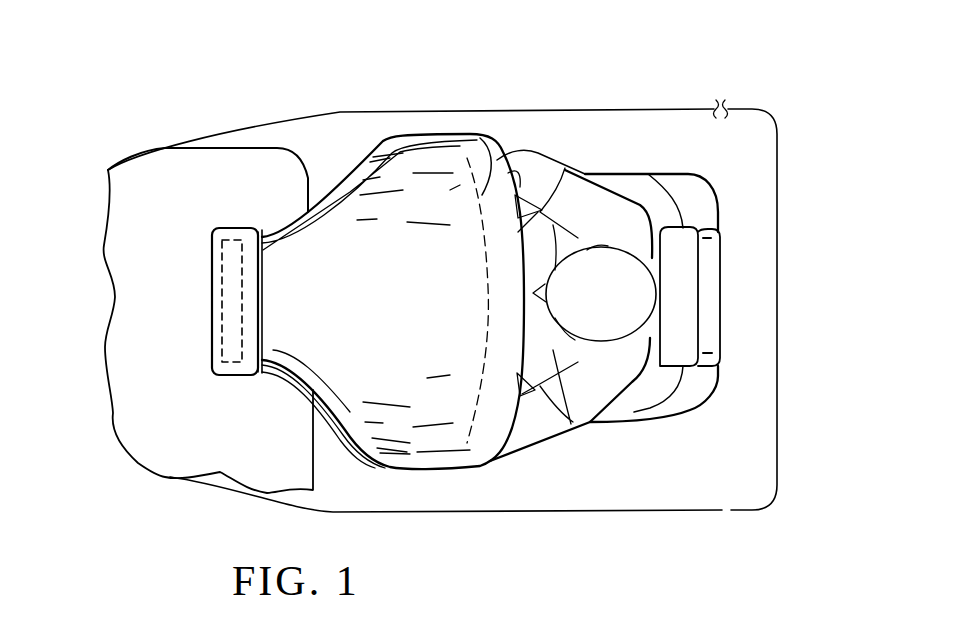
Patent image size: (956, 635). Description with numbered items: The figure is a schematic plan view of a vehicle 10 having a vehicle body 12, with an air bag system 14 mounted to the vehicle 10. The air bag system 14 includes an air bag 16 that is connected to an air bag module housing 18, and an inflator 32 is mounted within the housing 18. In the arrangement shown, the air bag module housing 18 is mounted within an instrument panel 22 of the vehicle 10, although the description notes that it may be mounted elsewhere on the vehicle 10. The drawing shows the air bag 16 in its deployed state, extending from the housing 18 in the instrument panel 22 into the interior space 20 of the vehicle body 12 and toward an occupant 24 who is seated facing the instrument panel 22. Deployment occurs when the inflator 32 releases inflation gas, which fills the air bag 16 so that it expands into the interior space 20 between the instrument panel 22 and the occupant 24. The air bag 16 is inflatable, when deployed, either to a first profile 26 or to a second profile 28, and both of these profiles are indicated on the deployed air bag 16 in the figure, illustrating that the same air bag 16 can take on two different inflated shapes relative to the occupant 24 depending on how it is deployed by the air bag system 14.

The vehicle 10 is at (700, 66).
The vehicle body 12 is at (776, 272).
The air bag system 14 is at (319, 164).
The air bag 16 is at (488, 438).
The air bag module housing 18 is at (212, 243).
The interior space 20 is at (553, 455).
The instrument panel 22 is at (218, 183).
The occupant 24 is at (608, 203).
The first profile 26 is at (500, 160).
The second profile 28 is at (522, 176).
The inflator 32 is at (222, 310).